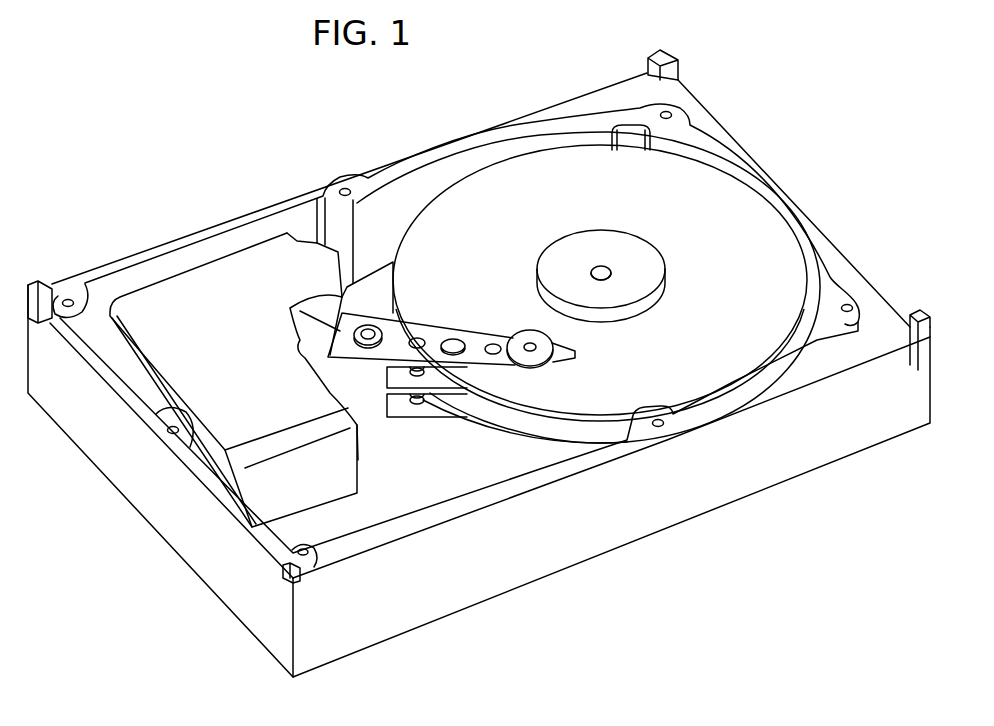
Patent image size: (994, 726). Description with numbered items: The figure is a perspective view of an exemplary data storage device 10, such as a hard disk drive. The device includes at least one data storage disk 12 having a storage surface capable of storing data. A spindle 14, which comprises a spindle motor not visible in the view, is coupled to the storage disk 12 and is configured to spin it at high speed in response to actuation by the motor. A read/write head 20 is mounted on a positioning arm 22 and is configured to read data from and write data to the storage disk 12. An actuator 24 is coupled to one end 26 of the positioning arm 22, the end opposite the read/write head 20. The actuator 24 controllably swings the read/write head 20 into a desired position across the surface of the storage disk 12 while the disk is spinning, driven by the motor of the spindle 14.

The data storage device 10 is at (479, 363).
The data storage disk 12 is at (767, 270).
The spindle 14 is at (627, 248).
The read/write head 20 is at (580, 352).
The positioning arm 22 is at (396, 331).
The actuator 24 is at (258, 275).
The end of the positioning arm 26 is at (375, 405).